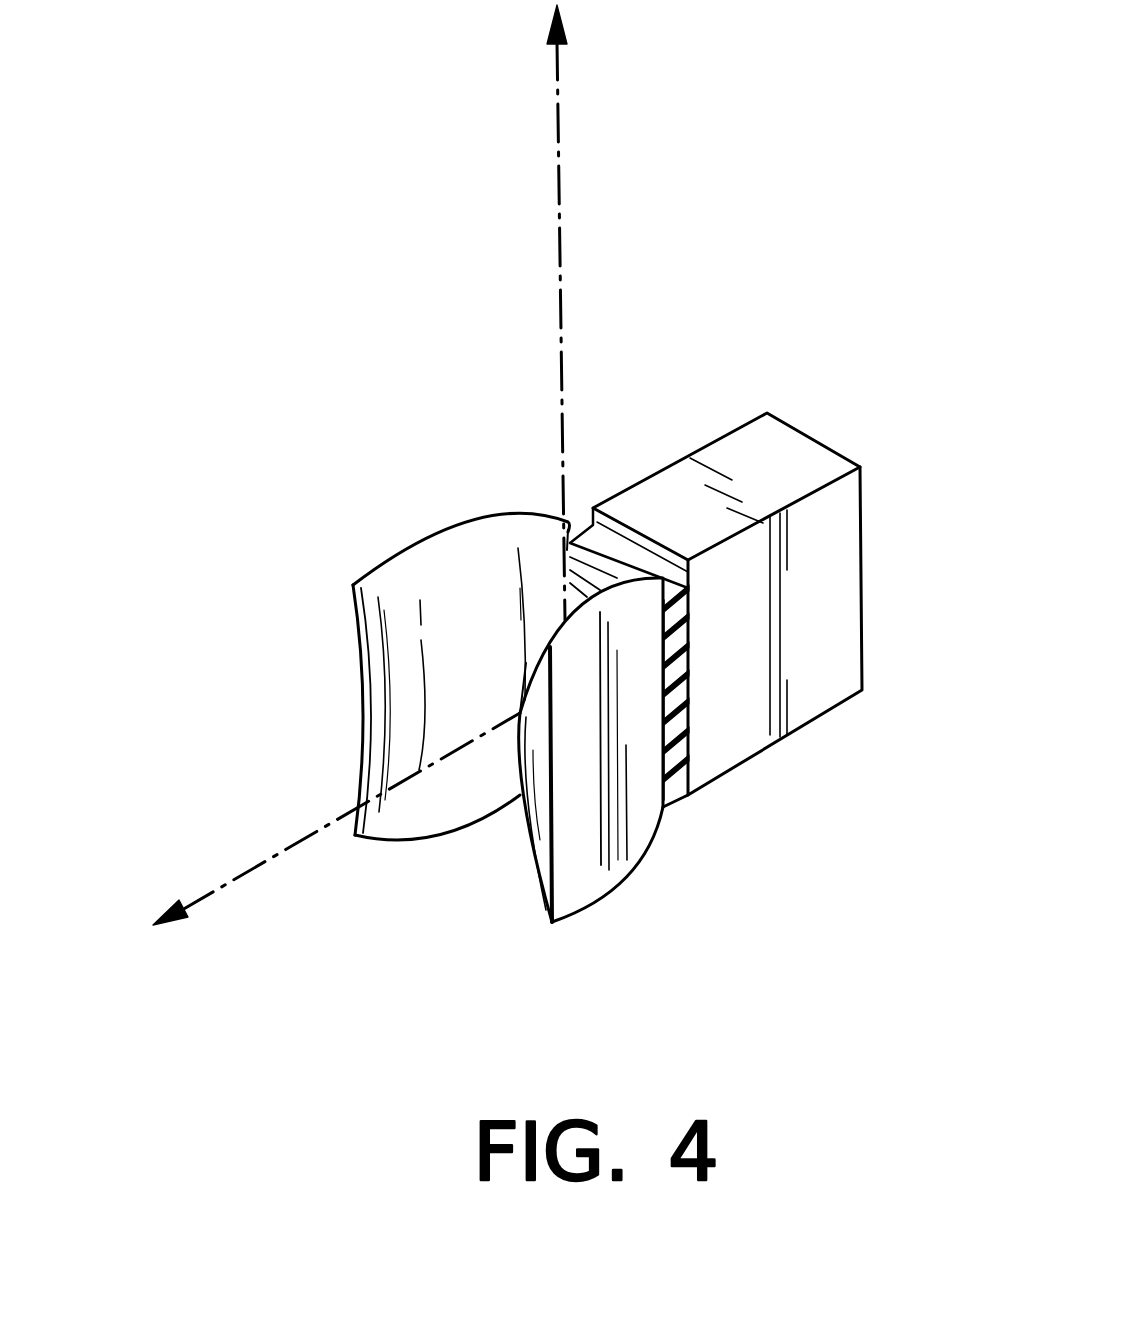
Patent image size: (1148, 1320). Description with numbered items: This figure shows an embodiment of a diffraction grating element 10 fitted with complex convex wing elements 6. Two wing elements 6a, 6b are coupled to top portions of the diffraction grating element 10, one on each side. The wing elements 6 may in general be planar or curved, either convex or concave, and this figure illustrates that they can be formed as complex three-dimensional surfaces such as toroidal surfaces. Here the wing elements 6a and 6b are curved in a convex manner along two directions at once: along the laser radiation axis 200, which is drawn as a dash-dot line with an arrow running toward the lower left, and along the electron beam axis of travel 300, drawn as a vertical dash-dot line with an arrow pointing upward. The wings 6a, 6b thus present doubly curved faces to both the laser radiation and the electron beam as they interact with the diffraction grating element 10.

The wing elements 6 is at (308, 549).
The complex convex wing element 6a is at (452, 518).
The complex convex wing element 6b is at (640, 873).
The diffraction grating element 10 is at (747, 398).
The laser radiation axis 200 is at (222, 888).
The electron beam axis of travel 300 is at (560, 116).